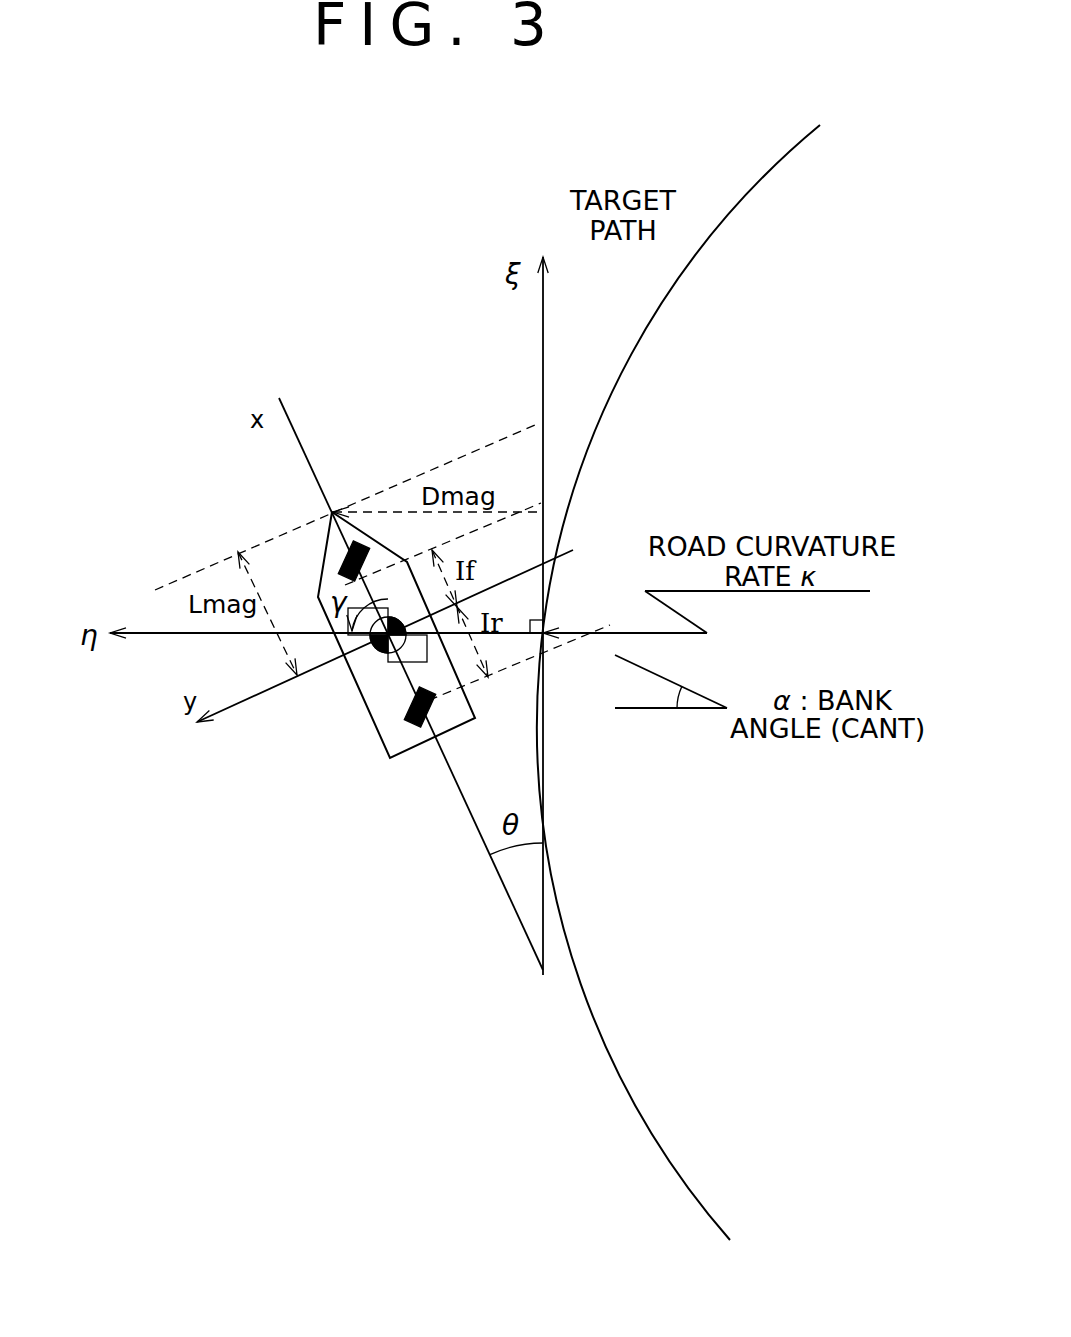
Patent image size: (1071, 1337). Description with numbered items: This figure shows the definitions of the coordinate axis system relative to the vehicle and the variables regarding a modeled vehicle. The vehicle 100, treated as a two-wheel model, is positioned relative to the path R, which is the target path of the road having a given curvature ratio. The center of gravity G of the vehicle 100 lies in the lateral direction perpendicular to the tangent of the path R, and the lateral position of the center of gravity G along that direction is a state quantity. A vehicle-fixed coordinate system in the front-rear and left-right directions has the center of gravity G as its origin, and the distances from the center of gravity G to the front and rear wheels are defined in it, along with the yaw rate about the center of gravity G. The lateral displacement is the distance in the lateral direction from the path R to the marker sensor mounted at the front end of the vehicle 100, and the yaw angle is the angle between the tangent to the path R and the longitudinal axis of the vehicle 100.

The vehicle 100 is at (390, 757).
The center of gravity G is at (378, 650).
The path R is at (778, 163).